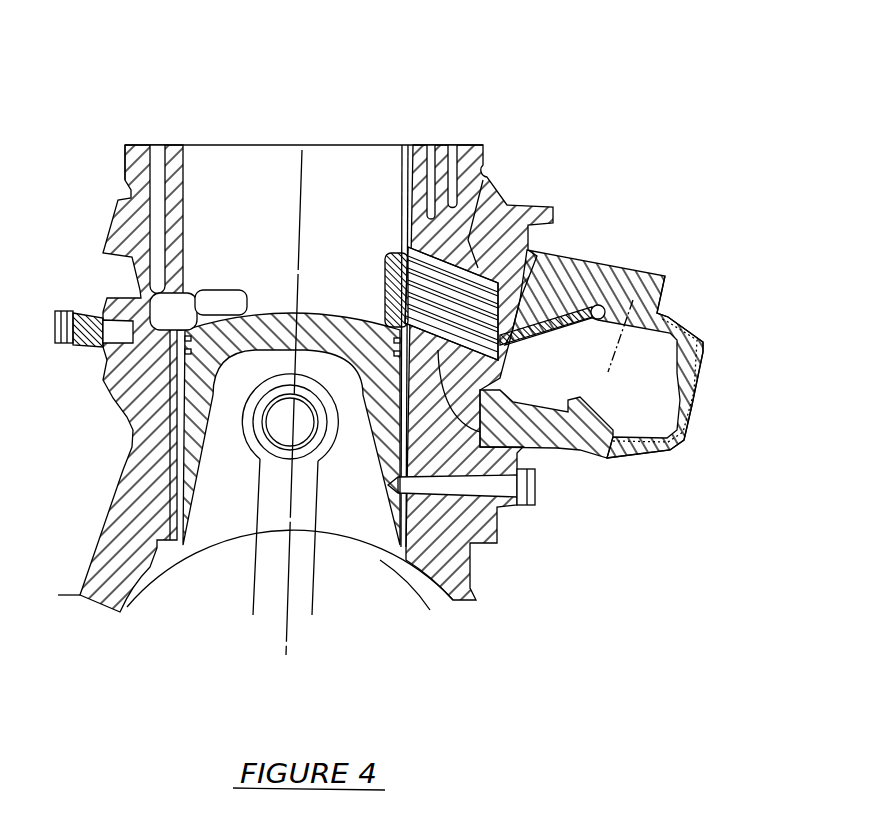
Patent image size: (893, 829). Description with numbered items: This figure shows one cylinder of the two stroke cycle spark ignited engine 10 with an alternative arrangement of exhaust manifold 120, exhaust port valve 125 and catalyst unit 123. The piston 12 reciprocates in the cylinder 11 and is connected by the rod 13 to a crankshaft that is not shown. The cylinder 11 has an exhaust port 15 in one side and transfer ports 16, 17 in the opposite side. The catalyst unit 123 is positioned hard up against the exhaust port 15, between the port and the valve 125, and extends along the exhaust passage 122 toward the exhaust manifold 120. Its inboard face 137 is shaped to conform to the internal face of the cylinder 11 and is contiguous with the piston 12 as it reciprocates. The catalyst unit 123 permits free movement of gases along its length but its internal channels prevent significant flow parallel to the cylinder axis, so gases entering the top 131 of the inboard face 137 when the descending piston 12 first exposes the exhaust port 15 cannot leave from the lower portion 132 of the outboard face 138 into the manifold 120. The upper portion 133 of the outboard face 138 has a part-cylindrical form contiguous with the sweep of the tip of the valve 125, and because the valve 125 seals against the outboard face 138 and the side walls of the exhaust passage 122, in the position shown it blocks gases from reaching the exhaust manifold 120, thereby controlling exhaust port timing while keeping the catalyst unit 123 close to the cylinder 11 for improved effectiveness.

The two stroke cycle spark ignited engine 10 is at (222, 110).
The cylinder 11 is at (247, 166).
The piston 12 is at (203, 366).
The rod 13 is at (266, 561).
The exhaust port 15 is at (405, 249).
The transfer port 16 is at (178, 319).
The transfer port 17 is at (218, 296).
The exhaust manifold 120 is at (706, 350).
The exhaust passage 122 is at (543, 462).
The catalyst unit 123 is at (413, 250).
The exhaust port valve 125 is at (540, 275).
The top of the inboard face 131 is at (407, 247).
The lower portion of the outboard face 132 is at (480, 373).
The upper portion of the outboard face 133 is at (535, 318).
The inboard face 137 is at (384, 281).
The outboard face 138 is at (497, 348).